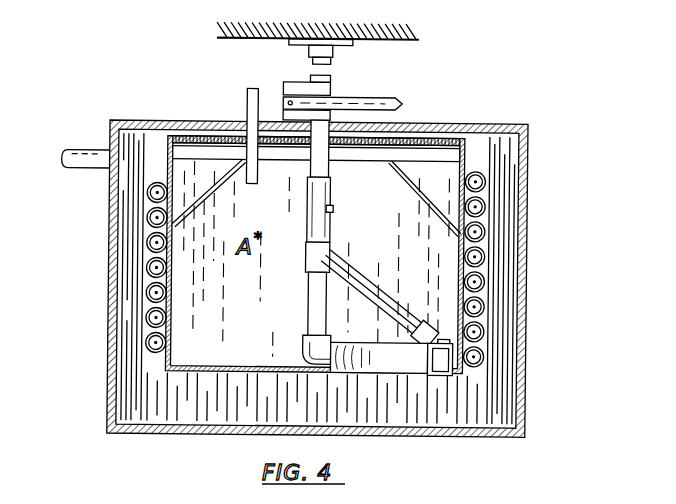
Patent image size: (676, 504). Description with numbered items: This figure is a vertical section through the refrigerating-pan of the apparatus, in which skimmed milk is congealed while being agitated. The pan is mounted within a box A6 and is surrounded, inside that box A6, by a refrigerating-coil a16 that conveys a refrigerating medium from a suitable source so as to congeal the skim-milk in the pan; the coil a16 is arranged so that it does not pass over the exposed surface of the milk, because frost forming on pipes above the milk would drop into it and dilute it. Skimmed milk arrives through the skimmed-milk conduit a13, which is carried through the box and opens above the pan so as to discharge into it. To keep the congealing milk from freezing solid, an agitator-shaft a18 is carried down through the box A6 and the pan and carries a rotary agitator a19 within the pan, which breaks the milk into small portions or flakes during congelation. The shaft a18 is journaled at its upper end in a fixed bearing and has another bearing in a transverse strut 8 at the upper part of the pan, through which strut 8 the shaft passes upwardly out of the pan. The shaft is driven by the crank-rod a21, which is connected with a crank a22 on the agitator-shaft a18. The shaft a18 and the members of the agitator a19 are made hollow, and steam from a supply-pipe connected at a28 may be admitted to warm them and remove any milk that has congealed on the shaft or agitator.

The box A6 is at (528, 203).
The refrigerating-coil a16 is at (148, 266).
The skimmed-milk conduit a13 is at (247, 101).
The crank a22 is at (286, 82).
The crank-rod a21 is at (370, 99).
The agitator-shaft a18 is at (310, 303).
The steam connection a28 is at (334, 207).
The transverse strut 8 is at (356, 159).
The rotary agitator a19 is at (390, 368).